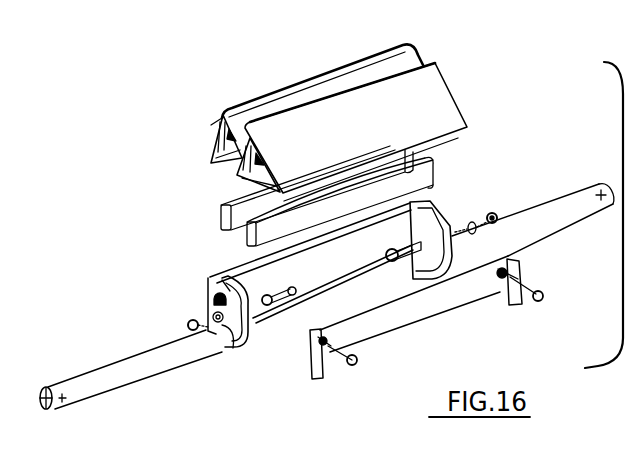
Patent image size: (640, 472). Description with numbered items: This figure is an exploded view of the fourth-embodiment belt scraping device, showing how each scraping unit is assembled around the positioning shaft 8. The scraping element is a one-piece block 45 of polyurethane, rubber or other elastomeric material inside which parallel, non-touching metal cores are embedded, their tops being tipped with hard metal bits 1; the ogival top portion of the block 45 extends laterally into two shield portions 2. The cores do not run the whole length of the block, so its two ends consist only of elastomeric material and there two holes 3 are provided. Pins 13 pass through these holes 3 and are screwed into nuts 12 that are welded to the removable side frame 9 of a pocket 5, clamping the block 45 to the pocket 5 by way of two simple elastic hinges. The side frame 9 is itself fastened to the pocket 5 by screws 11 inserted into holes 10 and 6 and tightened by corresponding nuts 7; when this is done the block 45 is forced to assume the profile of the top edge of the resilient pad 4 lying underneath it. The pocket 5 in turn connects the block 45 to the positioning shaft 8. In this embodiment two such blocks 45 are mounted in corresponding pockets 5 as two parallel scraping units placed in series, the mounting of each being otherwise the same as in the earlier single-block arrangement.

The hard metal bits 1 is at (308, 106).
The shield portions 2 is at (440, 110).
The holes 3 is at (250, 172).
The one-piece block 45 is at (220, 117).
The resilient pad 4 is at (237, 233).
The pocket 5 is at (246, 269).
The holes 6 is at (238, 314).
The nuts 7 is at (198, 332).
The positioning shaft 8 is at (559, 212).
The removable side frame 9 is at (207, 279).
The holes 10 is at (309, 353).
The screws 11 is at (280, 305).
The nuts 12 is at (330, 338).
The pins 13 is at (356, 364).